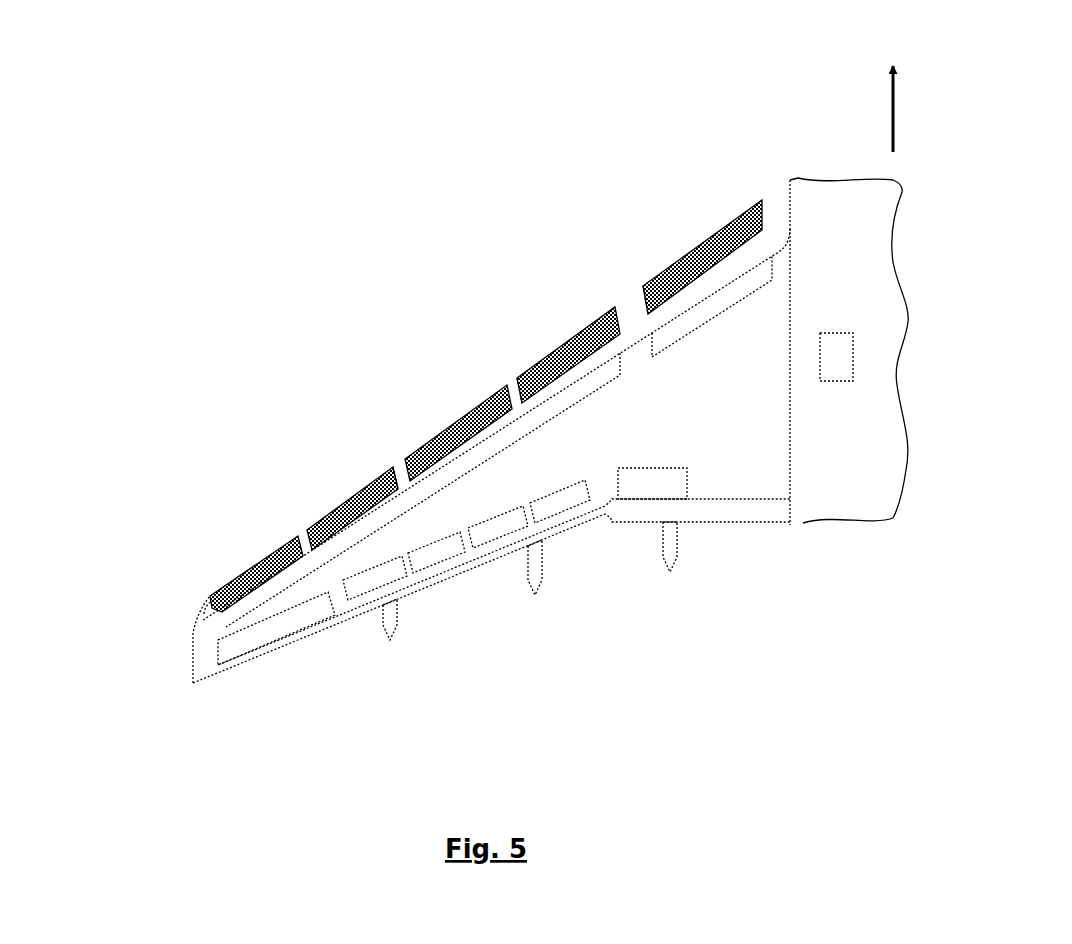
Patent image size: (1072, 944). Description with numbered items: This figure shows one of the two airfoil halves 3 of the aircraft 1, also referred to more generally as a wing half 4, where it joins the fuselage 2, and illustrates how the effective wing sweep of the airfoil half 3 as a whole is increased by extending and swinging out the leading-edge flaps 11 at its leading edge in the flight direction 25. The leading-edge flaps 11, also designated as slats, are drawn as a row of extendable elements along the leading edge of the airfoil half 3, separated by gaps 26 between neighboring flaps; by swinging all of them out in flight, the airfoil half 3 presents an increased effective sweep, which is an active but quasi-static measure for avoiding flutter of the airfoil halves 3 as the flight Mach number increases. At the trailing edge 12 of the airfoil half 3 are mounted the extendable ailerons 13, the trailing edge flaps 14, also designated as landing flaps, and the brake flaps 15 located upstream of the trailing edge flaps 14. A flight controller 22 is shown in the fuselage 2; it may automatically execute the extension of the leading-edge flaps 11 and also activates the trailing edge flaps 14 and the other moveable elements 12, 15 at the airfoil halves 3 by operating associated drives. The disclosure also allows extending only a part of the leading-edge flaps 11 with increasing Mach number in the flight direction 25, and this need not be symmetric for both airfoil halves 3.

The aircraft 1 is at (541, 196).
The fuselage 2 is at (836, 206).
The airfoil half 3 is at (137, 639).
The wing half 4 is at (188, 635).
The leading-edge flap 11 is at (279, 547).
The trailing edge 12 is at (210, 681).
The aileron 13 is at (278, 640).
The trailing edge flap 14 is at (463, 578).
The brake flap 15 is at (378, 565).
The flight controller 22 is at (838, 352).
The flight direction 25 is at (897, 117).
The gaps between light exit elements 26 is at (387, 458).